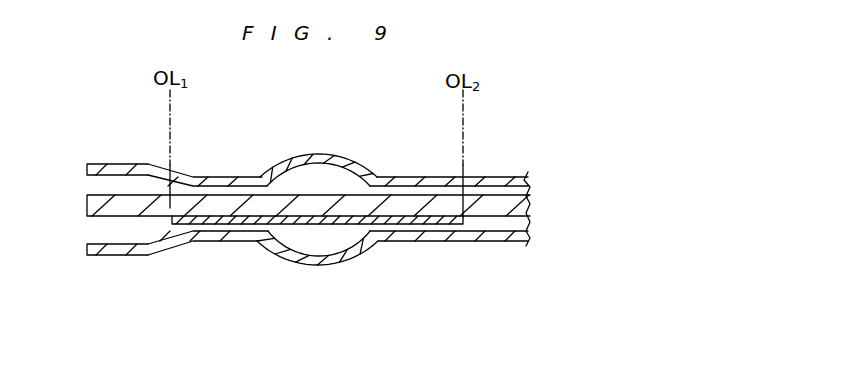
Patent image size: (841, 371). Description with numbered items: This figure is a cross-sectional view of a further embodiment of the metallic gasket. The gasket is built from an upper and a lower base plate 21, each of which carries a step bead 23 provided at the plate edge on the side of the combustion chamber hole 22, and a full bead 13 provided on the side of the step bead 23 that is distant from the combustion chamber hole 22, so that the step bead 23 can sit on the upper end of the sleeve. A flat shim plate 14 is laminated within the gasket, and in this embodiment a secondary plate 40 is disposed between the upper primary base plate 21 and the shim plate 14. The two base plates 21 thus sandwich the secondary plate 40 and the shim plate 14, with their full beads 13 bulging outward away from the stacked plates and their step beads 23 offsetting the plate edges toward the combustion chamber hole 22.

The full bead 13 is at (323, 153).
The shim plate 14 is at (292, 225).
The base plate 21 is at (503, 176).
The combustion chamber hole 22 is at (85, 168).
The step bead 23 is at (181, 175).
The secondary plate 40 is at (347, 195).